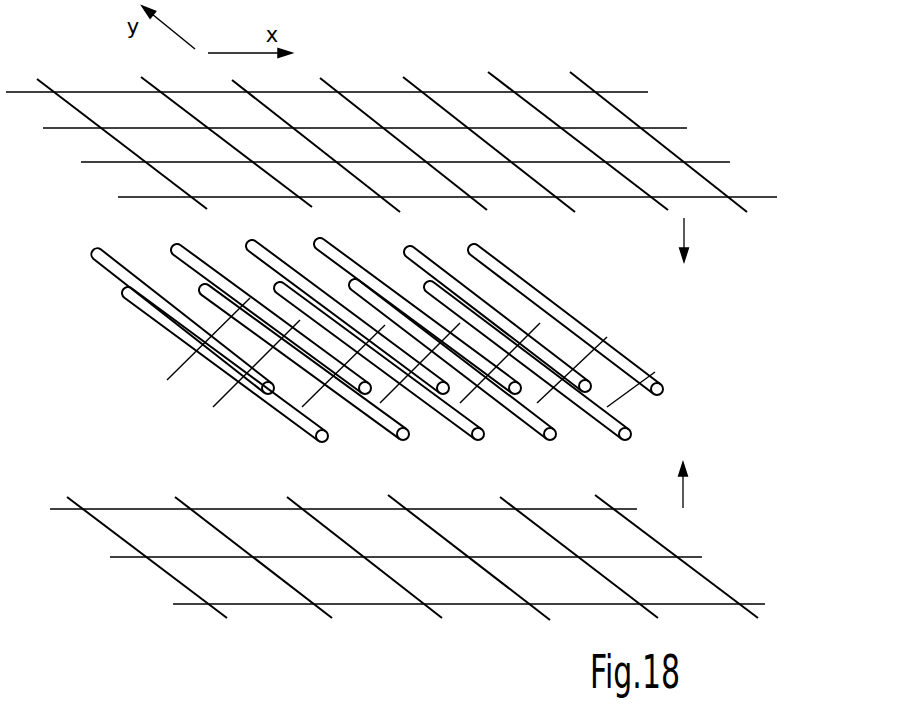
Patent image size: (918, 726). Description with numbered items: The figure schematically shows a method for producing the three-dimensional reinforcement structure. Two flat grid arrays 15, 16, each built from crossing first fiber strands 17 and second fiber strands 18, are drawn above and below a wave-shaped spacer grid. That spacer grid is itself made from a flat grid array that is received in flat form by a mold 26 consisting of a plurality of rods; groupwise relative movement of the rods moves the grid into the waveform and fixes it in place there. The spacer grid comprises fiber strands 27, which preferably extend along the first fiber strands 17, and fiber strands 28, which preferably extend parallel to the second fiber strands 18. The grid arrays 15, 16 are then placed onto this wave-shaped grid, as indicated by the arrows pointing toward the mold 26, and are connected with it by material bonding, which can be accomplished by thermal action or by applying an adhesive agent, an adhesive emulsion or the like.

The grid array 15 is at (413, 112).
The grid array 16 is at (695, 538).
The first fiber strands 17 is at (530, 198).
The second fiber strands 18 is at (455, 181).
The mold 26 is at (434, 361).
The fiber strands 27 is at (230, 398).
The fiber strands 28 is at (163, 343).